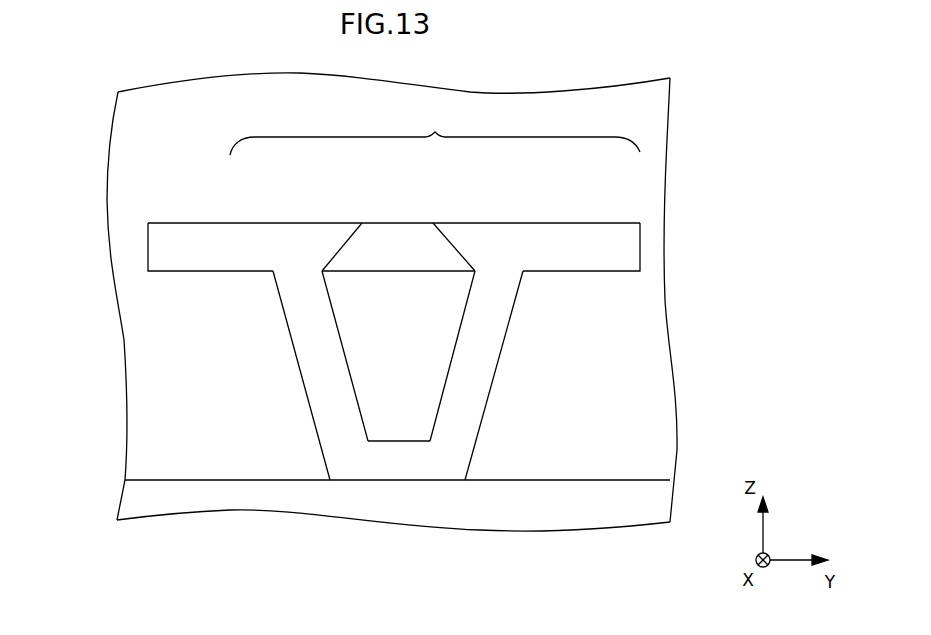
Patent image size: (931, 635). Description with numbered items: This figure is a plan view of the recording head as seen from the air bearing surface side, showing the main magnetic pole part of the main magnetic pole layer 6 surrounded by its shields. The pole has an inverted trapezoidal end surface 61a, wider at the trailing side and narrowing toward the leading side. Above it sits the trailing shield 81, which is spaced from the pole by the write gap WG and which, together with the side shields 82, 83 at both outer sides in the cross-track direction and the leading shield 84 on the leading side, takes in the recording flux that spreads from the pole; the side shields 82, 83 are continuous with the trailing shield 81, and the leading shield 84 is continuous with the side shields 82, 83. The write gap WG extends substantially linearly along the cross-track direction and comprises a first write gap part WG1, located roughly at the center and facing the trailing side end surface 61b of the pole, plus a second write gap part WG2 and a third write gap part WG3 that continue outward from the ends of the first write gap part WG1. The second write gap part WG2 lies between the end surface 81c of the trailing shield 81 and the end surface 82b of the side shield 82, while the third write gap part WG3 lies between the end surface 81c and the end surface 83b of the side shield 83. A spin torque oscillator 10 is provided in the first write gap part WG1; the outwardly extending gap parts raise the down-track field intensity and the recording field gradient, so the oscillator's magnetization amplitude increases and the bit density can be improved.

The trailing shield 81 is at (657, 138).
The end surface of the trailing shield 81c is at (200, 226).
The side shield 82 is at (170, 388).
The end surface of the side shield 82b is at (204, 272).
The side shield 83 is at (663, 387).
The end surface of the side shield 83b is at (584, 270).
The leading shield 84 is at (494, 519).
The main magnetic pole layer 6 is at (343, 347).
The spin torque oscillator 10 is at (449, 265).
The end surface of the main magnetic pole part 61a is at (399, 380).
The trailing side end surface of the main magnetic pole part 61b is at (384, 271).
The write gap WG is at (435, 133).
The first write gap part WG1 is at (463, 240).
The second write gap part WG2 is at (241, 236).
The third write gap part WG3 is at (620, 231).